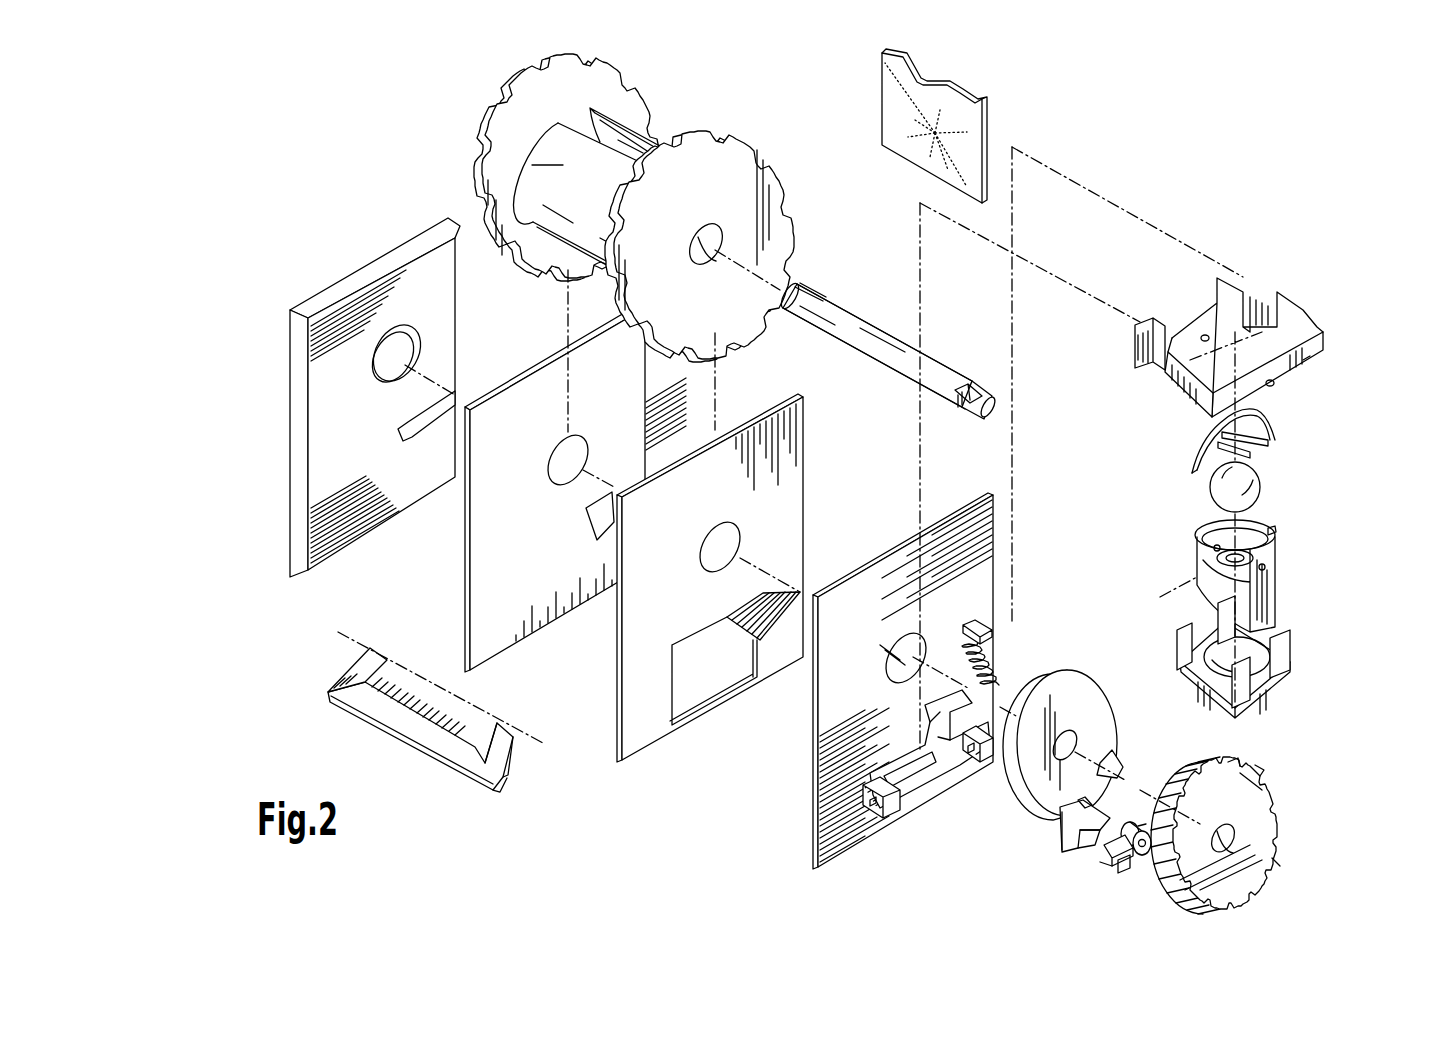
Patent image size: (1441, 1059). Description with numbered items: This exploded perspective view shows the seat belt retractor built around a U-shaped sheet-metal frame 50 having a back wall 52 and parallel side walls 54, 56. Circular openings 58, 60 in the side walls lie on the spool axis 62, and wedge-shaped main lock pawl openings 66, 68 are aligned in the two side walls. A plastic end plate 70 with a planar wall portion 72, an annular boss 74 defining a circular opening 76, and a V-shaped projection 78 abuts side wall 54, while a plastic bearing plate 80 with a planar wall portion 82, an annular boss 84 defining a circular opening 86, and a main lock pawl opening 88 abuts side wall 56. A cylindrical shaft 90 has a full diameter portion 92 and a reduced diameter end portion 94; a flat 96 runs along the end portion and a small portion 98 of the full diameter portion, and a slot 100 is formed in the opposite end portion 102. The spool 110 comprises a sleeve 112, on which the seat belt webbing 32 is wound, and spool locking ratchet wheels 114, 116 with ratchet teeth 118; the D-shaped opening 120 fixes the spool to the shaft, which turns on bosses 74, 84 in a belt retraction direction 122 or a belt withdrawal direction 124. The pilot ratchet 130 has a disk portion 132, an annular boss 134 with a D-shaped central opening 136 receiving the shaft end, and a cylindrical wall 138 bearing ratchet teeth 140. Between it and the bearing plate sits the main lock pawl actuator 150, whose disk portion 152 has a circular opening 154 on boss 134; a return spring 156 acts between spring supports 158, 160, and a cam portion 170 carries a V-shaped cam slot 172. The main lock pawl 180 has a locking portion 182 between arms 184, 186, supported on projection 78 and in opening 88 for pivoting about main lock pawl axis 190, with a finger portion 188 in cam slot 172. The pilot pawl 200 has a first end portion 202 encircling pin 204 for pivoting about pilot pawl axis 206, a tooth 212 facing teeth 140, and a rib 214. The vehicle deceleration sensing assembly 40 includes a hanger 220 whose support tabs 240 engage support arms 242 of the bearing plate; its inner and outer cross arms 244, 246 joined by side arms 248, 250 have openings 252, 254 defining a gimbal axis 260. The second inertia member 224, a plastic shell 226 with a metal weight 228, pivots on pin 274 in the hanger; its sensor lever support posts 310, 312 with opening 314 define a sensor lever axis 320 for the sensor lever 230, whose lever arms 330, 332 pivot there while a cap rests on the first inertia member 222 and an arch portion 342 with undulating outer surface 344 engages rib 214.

The seat belt webbing 32 is at (975, 120).
The vehicle deceleration sensing assembly 40 is at (1363, 495).
The frame 50 is at (547, 503).
The back wall 52 is at (668, 407).
The frame side wall 54 is at (463, 553).
The frame side wall 56 is at (732, 600).
The circular opening 58 is at (557, 487).
The circular opening 60 is at (733, 523).
The spool axis 62 is at (421, 370).
The main lock pawl opening 66 is at (587, 513).
The main lock pawl opening 68 is at (773, 590).
The end plate 70 is at (328, 397).
The planar wall portion 72 is at (330, 410).
The annular boss 74 is at (390, 345).
The circular opening 76 is at (372, 345).
The V-shaped projection 78 is at (411, 447).
The bearing plate 80 is at (925, 669).
The planar wall portion 82 is at (817, 787).
The annular boss 84 is at (903, 667).
The circular opening 86 is at (907, 645).
The main lock pawl opening 88 is at (958, 753).
The shaft 90 is at (913, 354).
The full diameter portion 92 is at (860, 357).
The reduced diameter end portion 94 is at (985, 390).
The flat 96 is at (956, 402).
The small portion 98 is at (962, 370).
The slot 100 is at (813, 292).
The opposite end portion 102 is at (787, 320).
The spool 110 is at (638, 208).
The sleeve 112 is at (562, 168).
The spool locking ratchet wheel 114 is at (522, 102).
The spool locking ratchet wheel 116 is at (784, 136).
The ratchet teeth 118 is at (582, 58).
The D-shaped opening 120 is at (714, 222).
The belt retraction direction 122 is at (268, 185).
The belt withdrawal direction 124 is at (195, 288).
The pilot ratchet 130 is at (1278, 827).
The disk portion 132 is at (1258, 807).
The annular boss 134 is at (1280, 868).
The D-shaped central opening 136 is at (1228, 850).
The cylindrical wall 138 is at (1230, 765).
The ratchet teeth 140 is at (1263, 768).
The main lock pawl actuator 150 is at (1087, 706).
The disk portion 152 is at (1062, 683).
The circular opening 154 is at (1070, 733).
The return spring 156 is at (982, 670).
The spring support 158 is at (1112, 760).
The spring support 160 is at (992, 632).
The cam portion 170 is at (1041, 836).
The cam slot 172 is at (1083, 845).
The main lock pawl 180 is at (425, 739).
The locking portion 182 is at (435, 757).
The arm 184 is at (357, 658).
The arm 186 is at (503, 722).
The finger portion 188 is at (501, 779).
The main lock pawl axis 190 is at (422, 680).
The pilot pawl 200 is at (1120, 818).
The first end portion 202 is at (1145, 830).
The pin 204 is at (1060, 818).
The pilot pawl axis 206 is at (1083, 860).
The tooth 212 is at (1103, 855).
The rib 214 is at (1128, 868).
The hanger 220 is at (1233, 304).
The first inertia member 222 is at (1268, 520).
The second inertia member 224 is at (1261, 562).
The plastic shell 226 is at (1187, 598).
The metal weight 228 is at (1297, 660).
The sensor lever 230 is at (1238, 448).
The support tabs 240 is at (1216, 276).
The support arms 242 is at (877, 817).
The inner cross arm 244 is at (1175, 338).
The outer cross arm 246 is at (1303, 360).
The side arm 248 is at (1286, 292).
The side arm 250 is at (1173, 403).
The opening 252 is at (1206, 336).
The opening 254 is at (1275, 378).
The gimbal axis 260 is at (1320, 328).
The pin 274 is at (1268, 566).
The sensor lever support post 310 is at (1212, 516).
The sensor lever support post 312 is at (1275, 527).
The opening 314 is at (1218, 545).
The sensor lever axis 320 is at (1215, 560).
The lever arm 330 is at (1265, 458).
The lever arm 332 is at (1253, 440).
The arch portion 342 is at (1210, 440).
The undulating outer surface 344 is at (1222, 423).